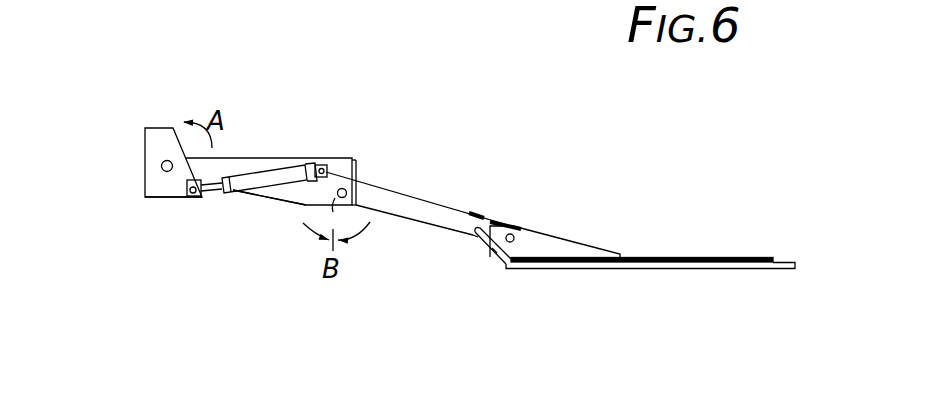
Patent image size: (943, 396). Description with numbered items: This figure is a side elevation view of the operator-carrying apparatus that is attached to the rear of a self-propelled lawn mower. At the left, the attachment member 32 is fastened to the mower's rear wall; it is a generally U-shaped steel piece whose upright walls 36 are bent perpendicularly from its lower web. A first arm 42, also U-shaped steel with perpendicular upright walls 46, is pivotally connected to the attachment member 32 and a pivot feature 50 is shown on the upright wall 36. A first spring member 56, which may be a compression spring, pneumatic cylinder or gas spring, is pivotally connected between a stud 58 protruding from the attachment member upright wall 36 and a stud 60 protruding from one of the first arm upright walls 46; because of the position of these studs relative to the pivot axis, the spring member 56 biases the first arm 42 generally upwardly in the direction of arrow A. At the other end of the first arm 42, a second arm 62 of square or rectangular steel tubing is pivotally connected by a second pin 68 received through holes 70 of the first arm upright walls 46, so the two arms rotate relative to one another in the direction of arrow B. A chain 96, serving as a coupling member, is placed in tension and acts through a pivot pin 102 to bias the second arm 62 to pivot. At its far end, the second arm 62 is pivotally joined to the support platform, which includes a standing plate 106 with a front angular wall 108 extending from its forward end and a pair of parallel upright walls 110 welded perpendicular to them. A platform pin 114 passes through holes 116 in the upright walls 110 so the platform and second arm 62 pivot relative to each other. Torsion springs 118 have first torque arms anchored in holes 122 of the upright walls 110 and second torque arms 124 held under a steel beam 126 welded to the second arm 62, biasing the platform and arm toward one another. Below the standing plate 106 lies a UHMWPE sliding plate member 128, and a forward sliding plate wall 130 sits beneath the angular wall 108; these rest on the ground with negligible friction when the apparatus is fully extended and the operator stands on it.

The attachment member 32 is at (154, 200).
The upright walls 36 is at (158, 145).
The first arm 42 is at (248, 195).
The upright walls 46 is at (281, 194).
The pivot pin 50 is at (162, 166).
The first spring member 56 is at (262, 177).
The stud 58 is at (189, 198).
The stud 60 is at (318, 163).
The second arm 62 is at (412, 203).
The second pin 68 is at (337, 195).
The holes 70 is at (343, 188).
The chain 96 is at (357, 187).
The pivot pin 102 is at (355, 176).
The standing plate 106 is at (713, 258).
The front angular wall 108 is at (497, 266).
The upright walls 110 is at (585, 247).
The platform pin 114 is at (493, 247).
The holes 116 is at (521, 236).
The torsion springs 118 is at (515, 223).
The holes 122 is at (540, 233).
The second torque arms 124 is at (491, 221).
The beam 126 is at (475, 212).
The sliding plate member 128 is at (673, 265).
The forward sliding plate wall 130 is at (480, 240).